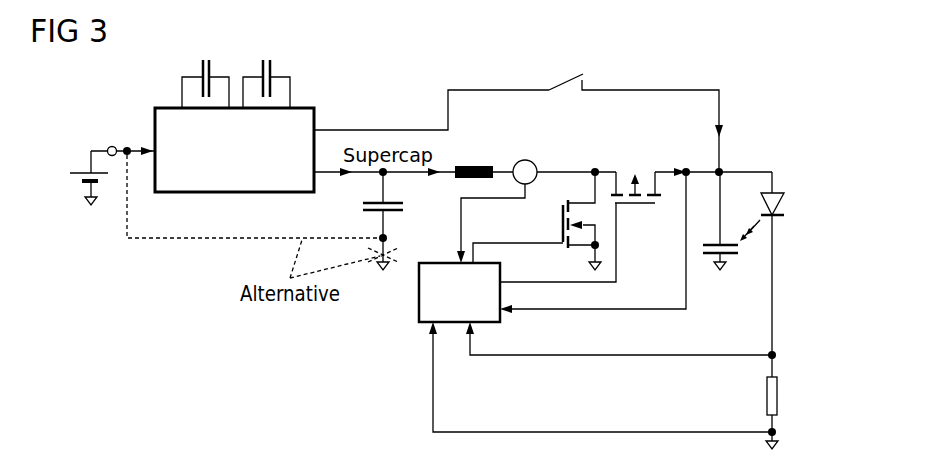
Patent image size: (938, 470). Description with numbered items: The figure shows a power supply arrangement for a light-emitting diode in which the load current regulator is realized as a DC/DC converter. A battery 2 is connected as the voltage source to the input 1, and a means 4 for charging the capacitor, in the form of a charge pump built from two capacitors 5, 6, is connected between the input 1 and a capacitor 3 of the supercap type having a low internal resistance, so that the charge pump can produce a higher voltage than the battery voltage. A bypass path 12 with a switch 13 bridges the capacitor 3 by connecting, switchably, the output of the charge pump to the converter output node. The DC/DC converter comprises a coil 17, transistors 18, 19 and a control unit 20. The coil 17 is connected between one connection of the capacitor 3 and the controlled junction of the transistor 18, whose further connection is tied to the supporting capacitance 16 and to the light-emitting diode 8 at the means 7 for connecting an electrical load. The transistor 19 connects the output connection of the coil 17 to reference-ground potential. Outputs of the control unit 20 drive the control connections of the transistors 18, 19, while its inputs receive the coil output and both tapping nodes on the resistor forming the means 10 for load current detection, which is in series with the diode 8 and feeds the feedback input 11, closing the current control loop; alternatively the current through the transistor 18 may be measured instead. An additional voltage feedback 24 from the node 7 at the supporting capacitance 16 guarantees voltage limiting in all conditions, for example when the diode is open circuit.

The input 1 is at (112, 146).
The battery 2 is at (69, 173).
The capacitor 3 is at (363, 207).
The means for charging the capacitor 4 is at (316, 118).
The capacitor 5 is at (200, 72).
The capacitor 6 is at (273, 66).
The means for connecting an electrical load 7 is at (721, 170).
The light-emitting diode 8 is at (781, 207).
The means for load current detection 10 is at (779, 393).
The feedback input 11 is at (430, 326).
The bypass path 12 is at (446, 104).
The switch 13 is at (574, 72).
The supporting capacitance 16 is at (730, 257).
The coil 17 is at (487, 162).
The transistor 18 is at (628, 170).
The transistor 19 is at (561, 229).
The control unit 20 is at (419, 295).
The voltage feedback 24 is at (640, 308).